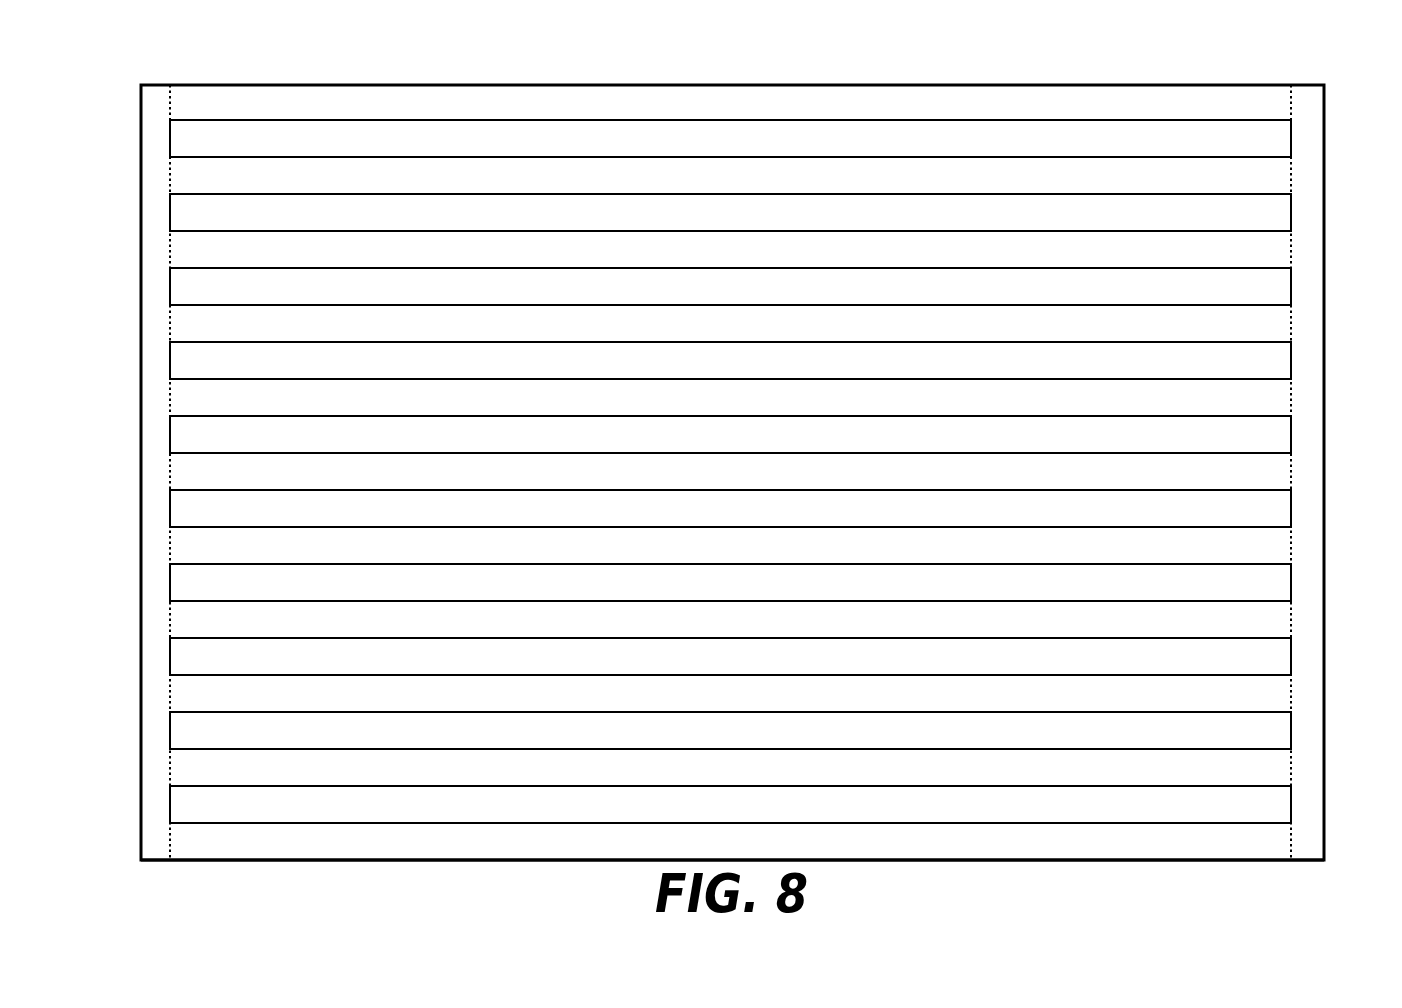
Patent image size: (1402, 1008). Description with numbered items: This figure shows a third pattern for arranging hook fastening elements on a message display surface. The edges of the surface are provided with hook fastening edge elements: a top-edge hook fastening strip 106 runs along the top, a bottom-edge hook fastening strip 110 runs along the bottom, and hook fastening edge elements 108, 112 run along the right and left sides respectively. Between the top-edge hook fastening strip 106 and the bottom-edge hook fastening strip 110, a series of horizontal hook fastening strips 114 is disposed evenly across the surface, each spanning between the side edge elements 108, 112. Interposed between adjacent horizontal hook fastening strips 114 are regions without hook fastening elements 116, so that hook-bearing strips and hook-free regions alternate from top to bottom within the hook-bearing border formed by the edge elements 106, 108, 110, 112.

The top-edge hook fastening strip 106 is at (805, 103).
The hook fastening edge element 108 is at (1308, 435).
The bottom-edge hook fastening strip 110 is at (1047, 847).
The hook fastening edge element 112 is at (160, 473).
The horizontal hook fastening strips 114 is at (468, 191).
The regions without hook fastening elements 116 is at (575, 152).